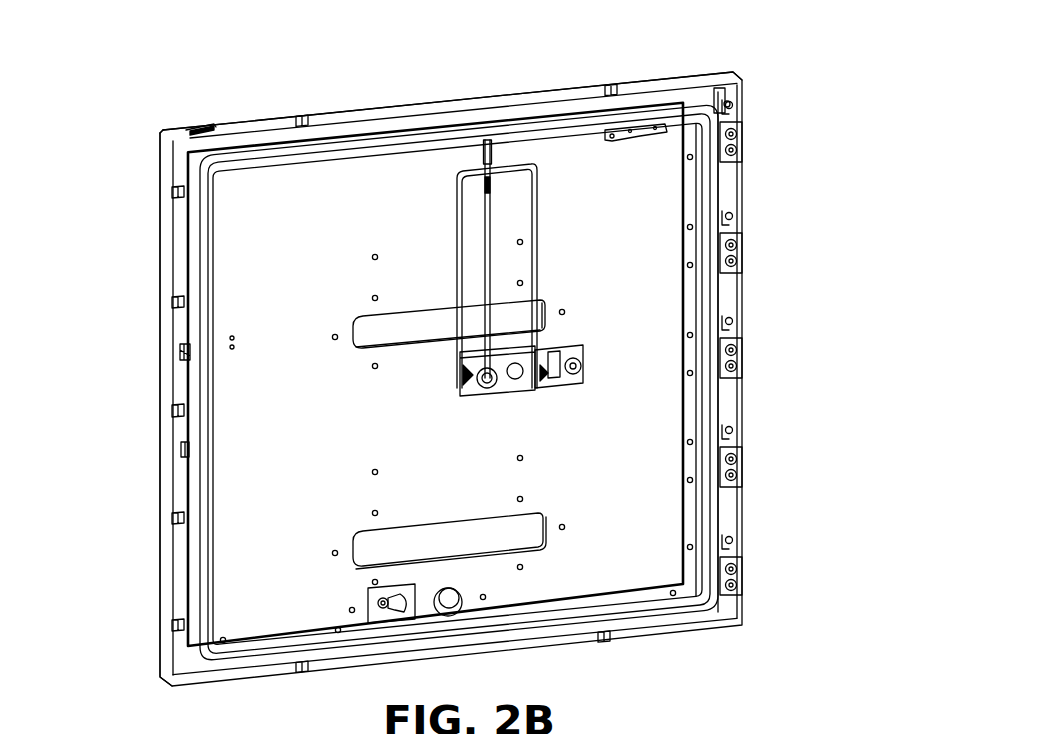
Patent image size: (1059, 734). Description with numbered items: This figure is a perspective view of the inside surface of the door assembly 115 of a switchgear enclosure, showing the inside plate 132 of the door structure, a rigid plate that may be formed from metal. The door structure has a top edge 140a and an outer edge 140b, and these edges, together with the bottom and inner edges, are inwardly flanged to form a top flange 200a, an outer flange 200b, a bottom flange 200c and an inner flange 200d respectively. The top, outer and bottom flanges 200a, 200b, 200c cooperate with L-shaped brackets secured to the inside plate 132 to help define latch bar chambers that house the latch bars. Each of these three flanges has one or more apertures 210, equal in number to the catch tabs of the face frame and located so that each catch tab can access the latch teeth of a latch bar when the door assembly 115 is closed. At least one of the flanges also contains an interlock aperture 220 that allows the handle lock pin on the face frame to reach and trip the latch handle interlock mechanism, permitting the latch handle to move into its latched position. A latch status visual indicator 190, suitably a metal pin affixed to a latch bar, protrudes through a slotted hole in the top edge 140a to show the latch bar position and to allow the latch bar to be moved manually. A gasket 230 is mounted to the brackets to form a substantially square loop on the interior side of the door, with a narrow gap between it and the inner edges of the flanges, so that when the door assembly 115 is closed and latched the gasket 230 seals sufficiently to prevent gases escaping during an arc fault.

The door assembly 115 is at (451, 374).
The inside plate 132 is at (630, 232).
The top edge 140a is at (533, 97).
The outer edge 140b is at (165, 173).
The latch status visual indicator 190 is at (213, 121).
The top flange 200a is at (355, 127).
The outer flange 200b is at (178, 243).
The bottom flange 200c is at (350, 660).
The inner flange 200d is at (735, 297).
The aperture 210 is at (178, 407).
The interlock aperture 220 is at (190, 352).
The gasket 230 is at (195, 283).